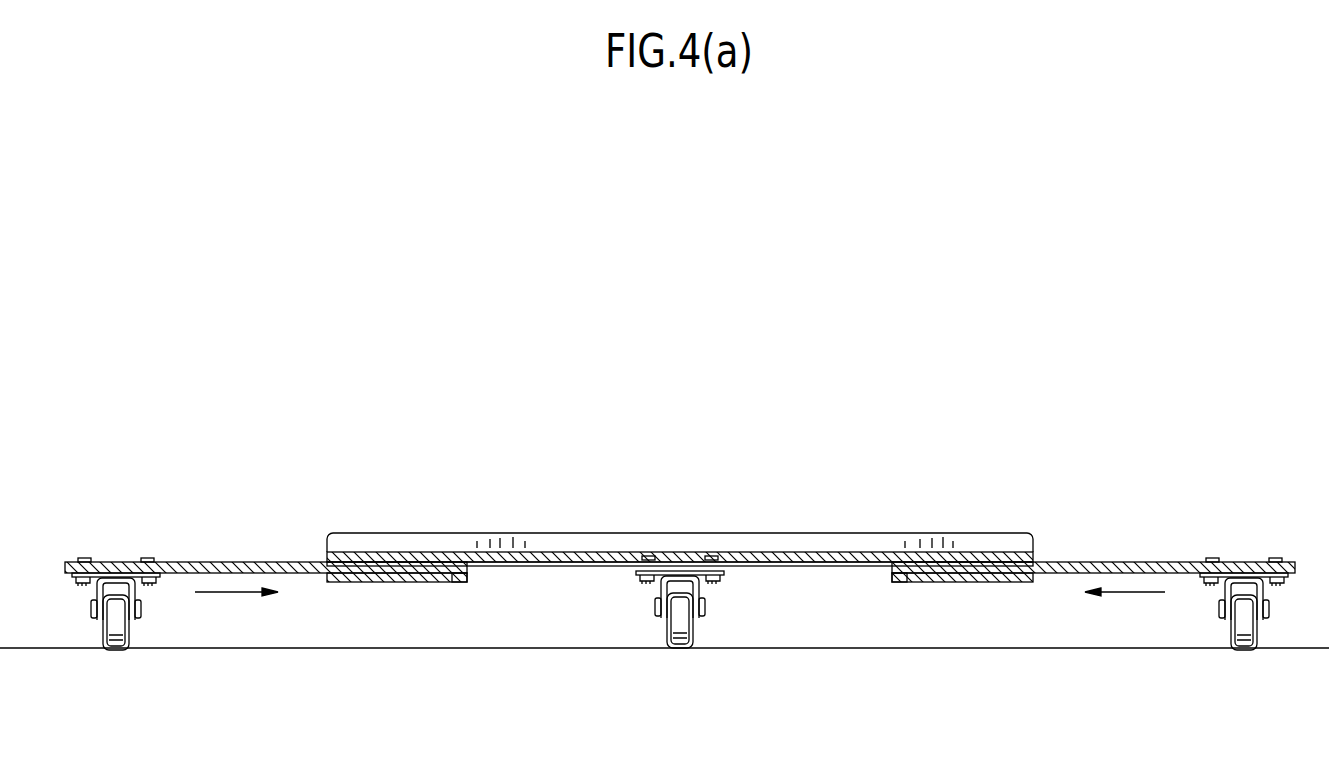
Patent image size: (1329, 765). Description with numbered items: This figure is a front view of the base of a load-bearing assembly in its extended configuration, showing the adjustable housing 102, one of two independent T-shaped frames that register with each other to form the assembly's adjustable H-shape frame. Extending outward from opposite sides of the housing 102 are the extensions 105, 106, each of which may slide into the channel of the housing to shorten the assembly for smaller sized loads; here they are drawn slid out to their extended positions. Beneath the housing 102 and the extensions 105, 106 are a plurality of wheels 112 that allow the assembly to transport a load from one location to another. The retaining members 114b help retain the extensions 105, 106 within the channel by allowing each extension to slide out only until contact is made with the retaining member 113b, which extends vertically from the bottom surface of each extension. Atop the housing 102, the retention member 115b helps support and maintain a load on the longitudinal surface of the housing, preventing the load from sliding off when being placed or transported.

The adjustable housing 102 is at (826, 356).
The extension 105 is at (230, 562).
The extension 106 is at (1160, 562).
The wheel 112 is at (128, 641).
The retaining member 113b is at (460, 583).
The retaining member 114b is at (373, 583).
The retention member 115b is at (742, 533).